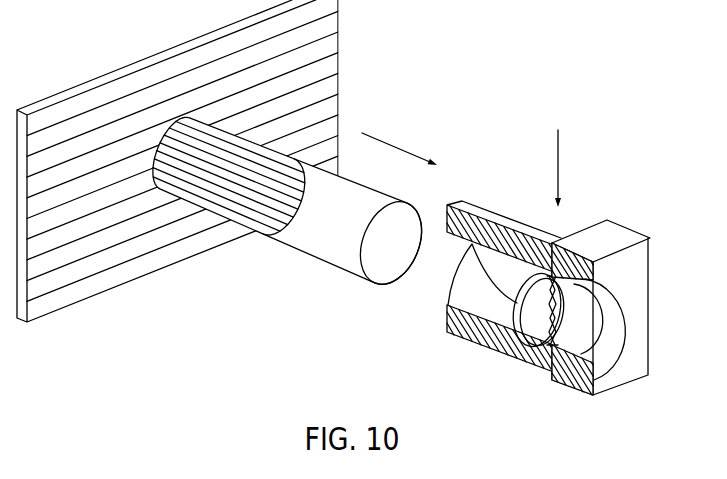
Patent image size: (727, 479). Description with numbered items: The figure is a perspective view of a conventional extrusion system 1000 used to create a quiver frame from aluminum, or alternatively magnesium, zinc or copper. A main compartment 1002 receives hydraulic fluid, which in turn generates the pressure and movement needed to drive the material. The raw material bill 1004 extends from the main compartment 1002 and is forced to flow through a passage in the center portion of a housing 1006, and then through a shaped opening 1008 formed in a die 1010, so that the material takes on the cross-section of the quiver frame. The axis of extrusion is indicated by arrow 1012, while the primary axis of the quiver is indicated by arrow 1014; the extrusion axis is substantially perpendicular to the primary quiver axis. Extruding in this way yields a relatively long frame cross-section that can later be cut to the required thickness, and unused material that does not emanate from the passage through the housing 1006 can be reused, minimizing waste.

The extrusion system 1000 is at (493, 96).
The main compartment 1002 is at (88, 307).
The raw material bill 1004 is at (317, 256).
The housing 1006 is at (465, 340).
The shaped opening 1008 is at (550, 348).
The die 1010 is at (476, 265).
The arrow indicating axis of extrusion 1012 is at (396, 146).
The arrow indicating primary axis of quiver 1014 is at (558, 163).